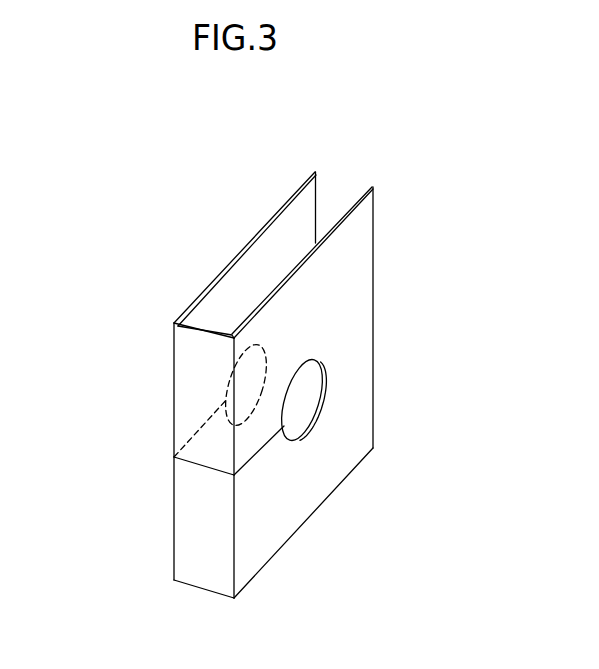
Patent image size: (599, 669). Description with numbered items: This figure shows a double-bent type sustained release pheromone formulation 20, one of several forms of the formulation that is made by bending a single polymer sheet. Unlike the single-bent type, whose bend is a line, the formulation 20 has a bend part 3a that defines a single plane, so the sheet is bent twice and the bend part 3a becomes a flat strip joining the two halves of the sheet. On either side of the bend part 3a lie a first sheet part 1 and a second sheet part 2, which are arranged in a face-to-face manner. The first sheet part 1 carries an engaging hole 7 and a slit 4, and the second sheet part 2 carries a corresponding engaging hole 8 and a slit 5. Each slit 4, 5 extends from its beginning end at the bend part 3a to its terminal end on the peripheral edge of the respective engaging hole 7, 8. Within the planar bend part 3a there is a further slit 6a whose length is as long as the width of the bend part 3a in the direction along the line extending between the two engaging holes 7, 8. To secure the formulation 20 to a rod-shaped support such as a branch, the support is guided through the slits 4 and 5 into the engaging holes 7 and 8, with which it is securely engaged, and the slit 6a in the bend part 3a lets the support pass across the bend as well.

The double-bent type sustained release pheromone formulation 20 is at (199, 217).
The first sheet part 1 is at (292, 220).
The second sheet part 2 is at (358, 254).
The bend part 3a is at (190, 348).
The slit 4 is at (196, 438).
The slit 5 is at (257, 452).
The slit 6a is at (198, 467).
The engaging hole 7 is at (217, 395).
The engaging hole 8 is at (320, 404).